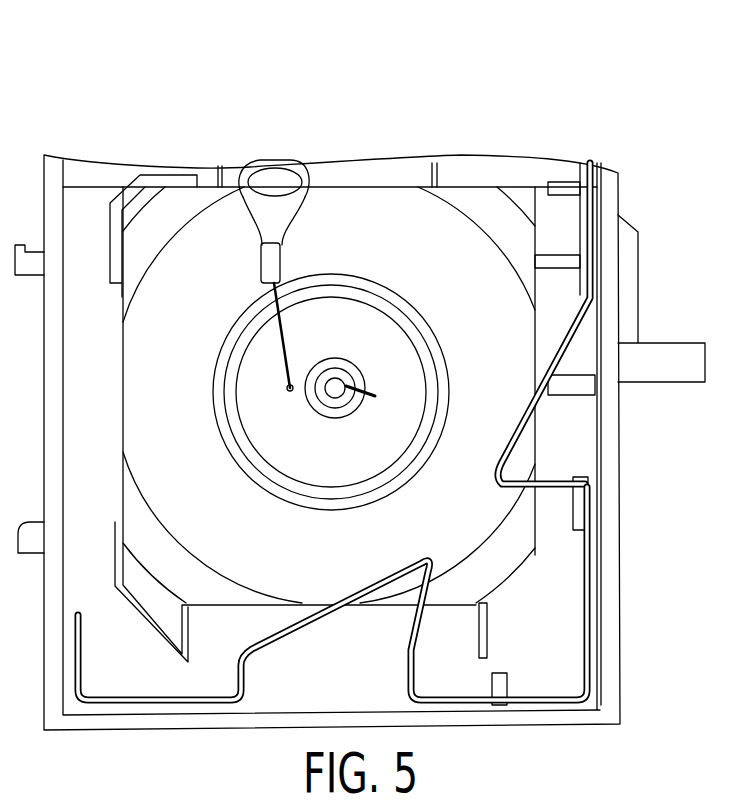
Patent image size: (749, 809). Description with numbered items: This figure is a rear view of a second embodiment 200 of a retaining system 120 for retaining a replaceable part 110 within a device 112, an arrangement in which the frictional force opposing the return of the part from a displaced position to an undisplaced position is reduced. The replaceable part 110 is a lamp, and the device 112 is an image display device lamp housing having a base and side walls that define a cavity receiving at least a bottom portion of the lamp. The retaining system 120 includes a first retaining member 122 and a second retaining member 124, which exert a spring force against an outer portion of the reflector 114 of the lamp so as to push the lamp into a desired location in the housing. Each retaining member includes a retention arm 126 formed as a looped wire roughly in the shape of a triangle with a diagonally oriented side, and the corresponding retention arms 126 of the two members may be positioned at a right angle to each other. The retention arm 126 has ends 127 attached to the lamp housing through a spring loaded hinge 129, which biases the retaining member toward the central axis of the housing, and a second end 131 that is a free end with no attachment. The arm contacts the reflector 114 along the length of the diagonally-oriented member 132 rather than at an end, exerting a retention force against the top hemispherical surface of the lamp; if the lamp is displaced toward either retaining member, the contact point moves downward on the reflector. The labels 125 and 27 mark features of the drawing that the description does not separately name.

The second embodiment 200 is at (603, 103).
The replaceable part 110 is at (406, 203).
The device 112 is at (602, 217).
The reflector 114 is at (355, 213).
The retaining system 120 is at (502, 372).
The first retaining member 122 is at (433, 556).
The second retaining member 124 is at (553, 487).
The gap 125 is at (512, 396).
The retention arm 126 is at (550, 377).
The ends 127 is at (385, 690).
The spring loaded hinge 129 is at (580, 188).
The second end 131 is at (494, 476).
The diagonally-oriented member 132 is at (552, 348).
The wire portion 27 is at (600, 325).